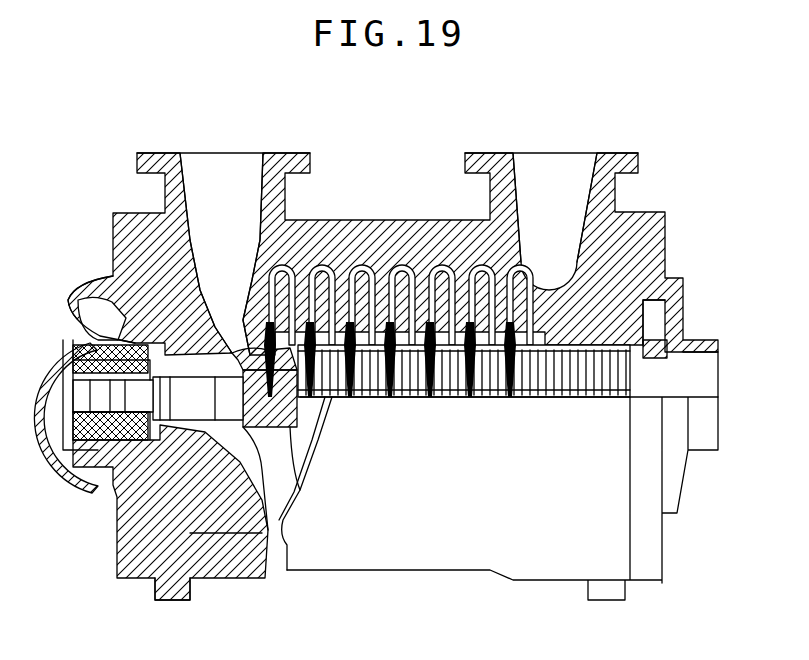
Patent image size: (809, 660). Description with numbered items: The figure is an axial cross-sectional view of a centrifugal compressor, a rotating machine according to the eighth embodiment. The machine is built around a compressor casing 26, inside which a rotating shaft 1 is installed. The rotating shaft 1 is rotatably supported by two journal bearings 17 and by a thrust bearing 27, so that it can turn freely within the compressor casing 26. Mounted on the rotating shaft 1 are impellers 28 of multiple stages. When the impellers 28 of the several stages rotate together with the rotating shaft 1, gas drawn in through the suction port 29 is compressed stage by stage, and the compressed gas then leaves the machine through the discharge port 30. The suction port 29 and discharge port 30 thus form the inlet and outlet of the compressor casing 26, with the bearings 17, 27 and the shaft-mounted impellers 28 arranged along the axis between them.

The rotating shaft 1 is at (170, 512).
The journal bearings 17 is at (402, 308).
The compressor casing 26 is at (393, 254).
The thrust bearing 27 is at (64, 379).
The impellers 28 is at (222, 597).
The suction port 29 is at (223, 223).
The discharge port 30 is at (551, 177).